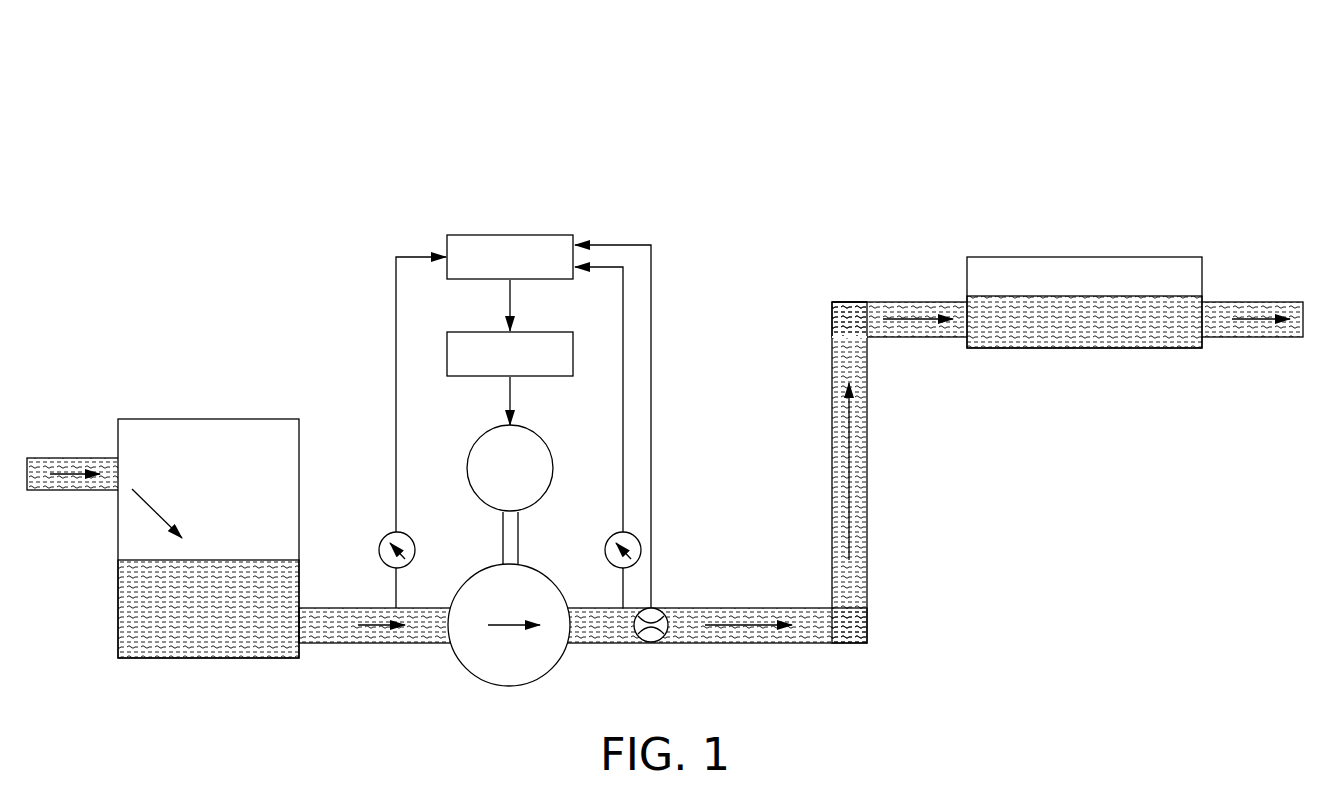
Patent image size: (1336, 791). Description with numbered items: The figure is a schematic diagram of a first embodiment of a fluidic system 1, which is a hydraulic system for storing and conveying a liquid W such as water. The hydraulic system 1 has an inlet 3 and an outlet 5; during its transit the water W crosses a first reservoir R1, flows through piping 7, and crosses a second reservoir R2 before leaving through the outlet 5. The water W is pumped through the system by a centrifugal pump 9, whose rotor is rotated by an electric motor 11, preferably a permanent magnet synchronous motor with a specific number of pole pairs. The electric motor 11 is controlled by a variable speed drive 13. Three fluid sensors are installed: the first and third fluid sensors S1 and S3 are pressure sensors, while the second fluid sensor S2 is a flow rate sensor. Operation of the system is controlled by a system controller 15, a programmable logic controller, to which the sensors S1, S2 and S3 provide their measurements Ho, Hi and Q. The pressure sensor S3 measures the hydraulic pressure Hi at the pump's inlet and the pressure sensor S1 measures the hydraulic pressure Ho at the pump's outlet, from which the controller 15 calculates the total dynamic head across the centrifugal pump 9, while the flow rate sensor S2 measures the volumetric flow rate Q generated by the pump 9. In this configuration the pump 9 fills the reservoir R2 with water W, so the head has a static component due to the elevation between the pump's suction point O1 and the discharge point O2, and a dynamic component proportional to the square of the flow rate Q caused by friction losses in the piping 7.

The fluidic system 1 is at (1092, 85).
The inlet 3 is at (66, 492).
The outlet 5 is at (1253, 303).
The piping 7 is at (737, 647).
The centrifugal pump 9 is at (492, 687).
The electric motor 11 is at (467, 458).
The variable speed drive 13 is at (553, 377).
The system controller 15 is at (508, 233).
The first reservoir R1 is at (208, 538).
The second reservoir R2 is at (1072, 267).
The liquid W is at (190, 648).
The suction point O1 is at (395, 658).
The discharge point O2 is at (953, 283).
The first fluid sensor S1 is at (609, 537).
The second fluid sensor S2 is at (662, 611).
The third fluid sensor S3 is at (381, 537).
The hydraulic pressure at the pump's inlet Hi is at (420, 377).
The hydraulic pressure at the pump's outlet Ho is at (599, 399).
The volumetric fluid flow rate Q is at (613, 410).